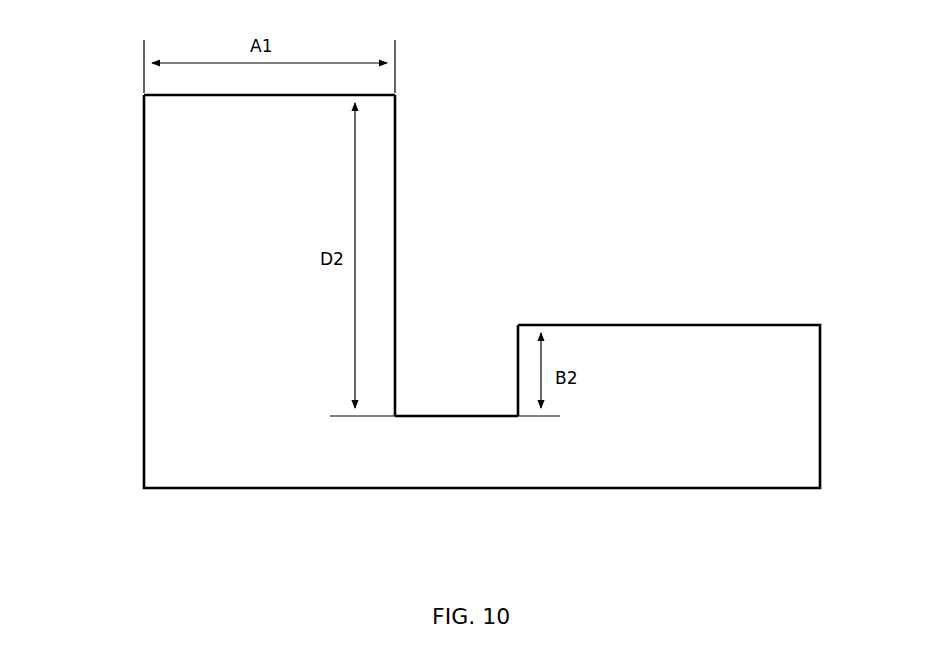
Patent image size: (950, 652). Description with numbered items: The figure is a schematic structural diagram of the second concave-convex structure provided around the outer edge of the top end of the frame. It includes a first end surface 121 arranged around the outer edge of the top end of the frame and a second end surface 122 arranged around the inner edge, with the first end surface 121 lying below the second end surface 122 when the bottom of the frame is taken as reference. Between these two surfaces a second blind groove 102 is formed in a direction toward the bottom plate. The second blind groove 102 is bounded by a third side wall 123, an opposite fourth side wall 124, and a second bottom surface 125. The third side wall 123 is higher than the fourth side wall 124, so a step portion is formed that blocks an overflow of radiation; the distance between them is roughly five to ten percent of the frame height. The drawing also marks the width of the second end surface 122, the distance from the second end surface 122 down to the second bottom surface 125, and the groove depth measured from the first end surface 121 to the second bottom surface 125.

The first end surface 121 is at (787, 321).
The second end surface 122 is at (220, 93).
The third side wall 123 is at (395, 200).
The fourth side wall 124 is at (518, 398).
The second bottom surface 125 is at (455, 417).
The second blind groove 102 is at (452, 363).